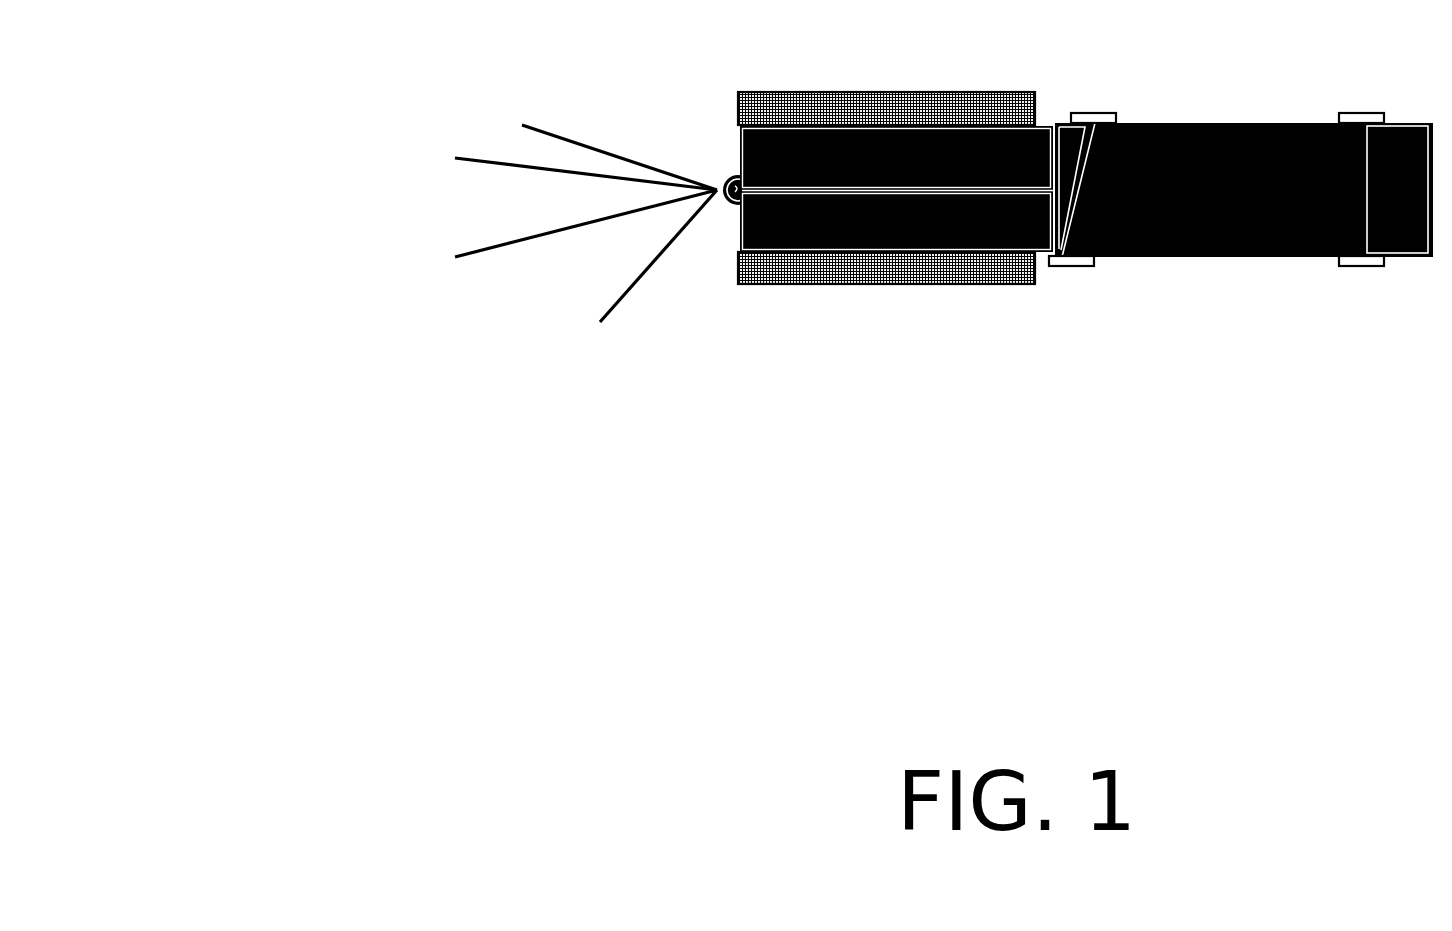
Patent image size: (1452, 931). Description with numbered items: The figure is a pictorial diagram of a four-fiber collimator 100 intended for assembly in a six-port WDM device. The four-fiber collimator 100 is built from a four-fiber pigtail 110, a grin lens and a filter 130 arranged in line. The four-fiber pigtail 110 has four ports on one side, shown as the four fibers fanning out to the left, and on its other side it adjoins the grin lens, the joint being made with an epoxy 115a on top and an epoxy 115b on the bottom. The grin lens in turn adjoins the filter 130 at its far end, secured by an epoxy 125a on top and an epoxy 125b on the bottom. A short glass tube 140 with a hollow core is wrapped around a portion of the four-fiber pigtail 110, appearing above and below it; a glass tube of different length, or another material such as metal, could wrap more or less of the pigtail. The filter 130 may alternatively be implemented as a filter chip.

The 4-fiber collimator 100 is at (178, 617).
The 4-fiber pigtail 110 is at (905, 189).
The epoxy 115a is at (1090, 112).
The epoxy 115b is at (1073, 267).
The epoxy 125a is at (1362, 112).
The epoxy 125b is at (1362, 267).
The filter 130 is at (1244, 190).
The short glass tube 140 is at (886, 188).